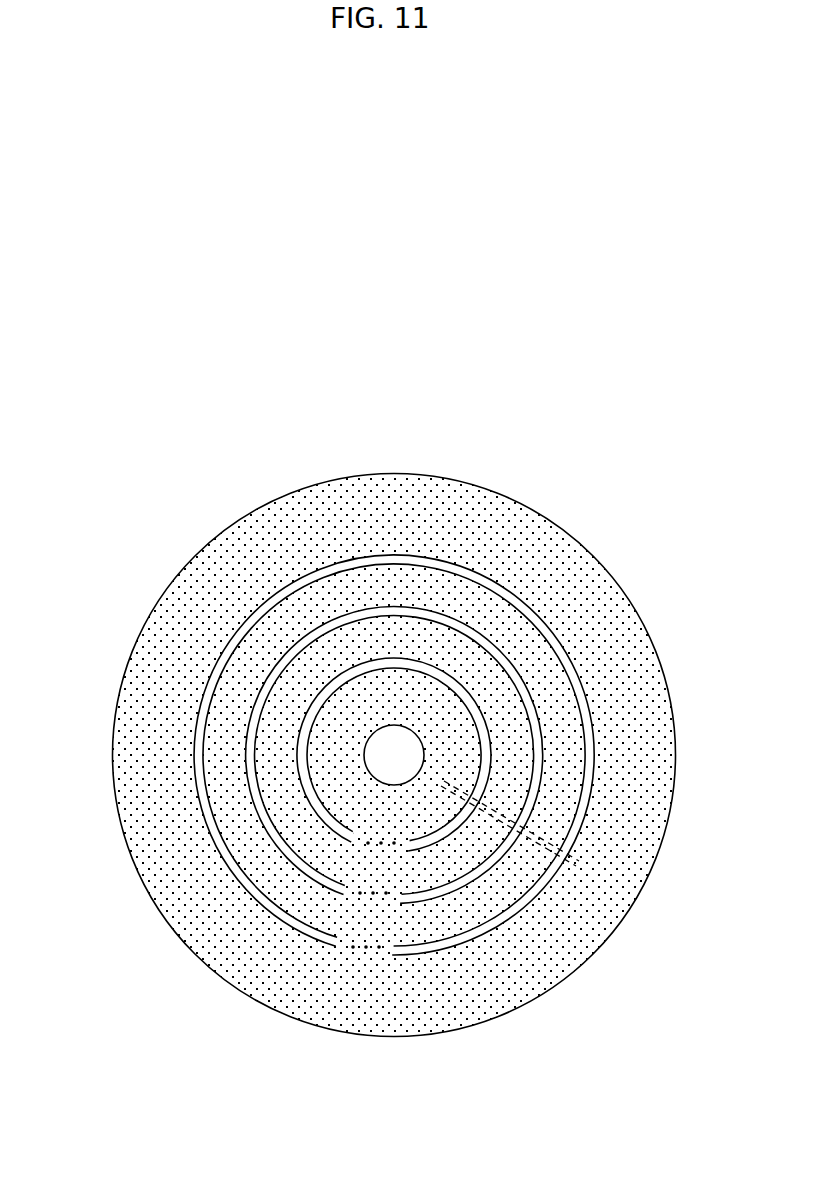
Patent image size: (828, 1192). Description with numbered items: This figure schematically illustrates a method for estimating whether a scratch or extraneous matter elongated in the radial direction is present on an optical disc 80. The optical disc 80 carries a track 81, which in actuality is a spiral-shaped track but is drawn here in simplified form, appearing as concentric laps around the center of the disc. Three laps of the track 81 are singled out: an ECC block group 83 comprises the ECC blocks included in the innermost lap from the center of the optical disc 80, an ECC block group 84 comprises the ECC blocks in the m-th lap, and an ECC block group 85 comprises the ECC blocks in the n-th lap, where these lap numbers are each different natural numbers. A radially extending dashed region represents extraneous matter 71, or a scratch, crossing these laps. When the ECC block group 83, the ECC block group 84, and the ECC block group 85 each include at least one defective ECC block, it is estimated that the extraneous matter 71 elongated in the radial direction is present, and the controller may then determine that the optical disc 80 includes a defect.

The optical disc 80 is at (369, 724).
The track 81 is at (557, 630).
The ECC block group 83 is at (335, 820).
The ECC block group 84 is at (262, 808).
The ECC block group 85 is at (200, 770).
The extraneous matter 71 is at (575, 867).